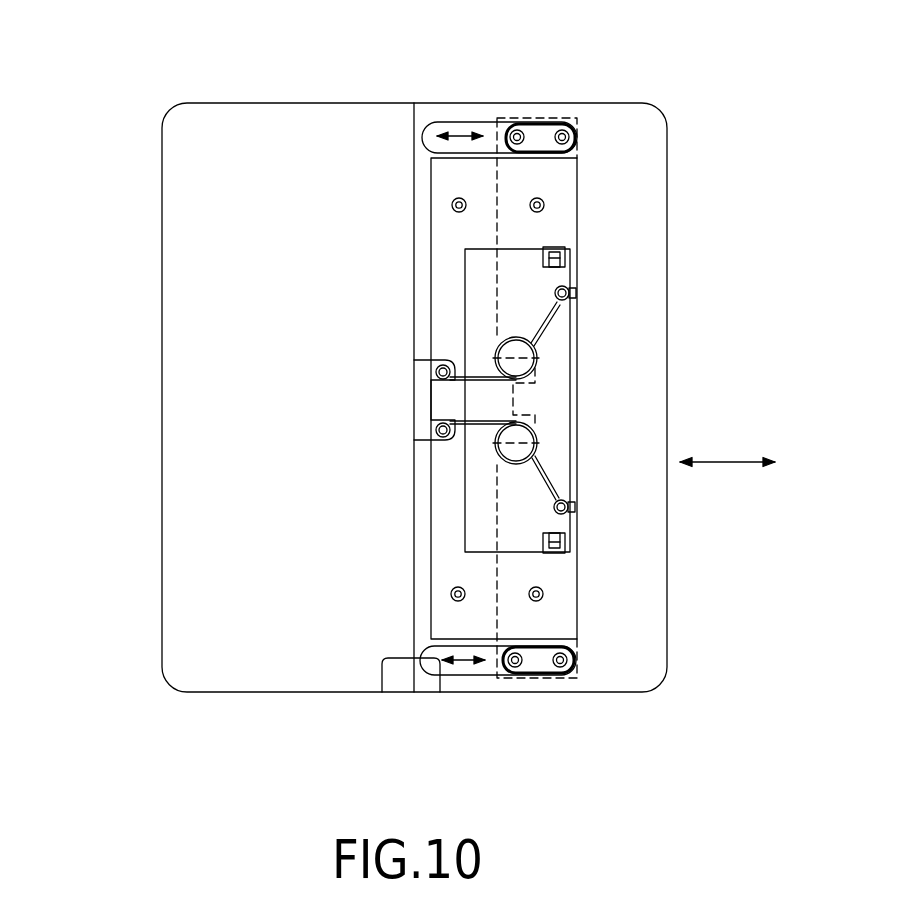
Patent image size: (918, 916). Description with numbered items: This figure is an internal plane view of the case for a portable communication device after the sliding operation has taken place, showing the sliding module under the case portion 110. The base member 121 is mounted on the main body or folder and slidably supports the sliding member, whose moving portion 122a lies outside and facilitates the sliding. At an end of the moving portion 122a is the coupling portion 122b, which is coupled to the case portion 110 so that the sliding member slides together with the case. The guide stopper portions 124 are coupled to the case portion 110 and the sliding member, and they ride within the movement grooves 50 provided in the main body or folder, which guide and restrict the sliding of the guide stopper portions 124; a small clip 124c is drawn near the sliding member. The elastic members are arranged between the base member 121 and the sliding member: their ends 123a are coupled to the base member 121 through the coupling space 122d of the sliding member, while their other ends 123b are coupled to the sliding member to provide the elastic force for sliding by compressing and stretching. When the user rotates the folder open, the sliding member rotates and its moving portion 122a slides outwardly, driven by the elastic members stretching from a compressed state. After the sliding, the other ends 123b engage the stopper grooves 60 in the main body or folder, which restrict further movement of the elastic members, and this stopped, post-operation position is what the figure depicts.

The case portion 110 is at (158, 512).
The base member 121 is at (445, 178).
The moving portion 122a is at (642, 168).
The coupling portion 122b is at (560, 119).
The coupling space 122d is at (533, 423).
The guide stopper portion 124 is at (534, 134).
The fixing clip 124c is at (568, 247).
The movement groove 50 is at (460, 126).
The stopper groove 60 is at (570, 287).
The ends of the elastic members 123a is at (437, 373).
The other ends of the elastic members 123b is at (573, 298).